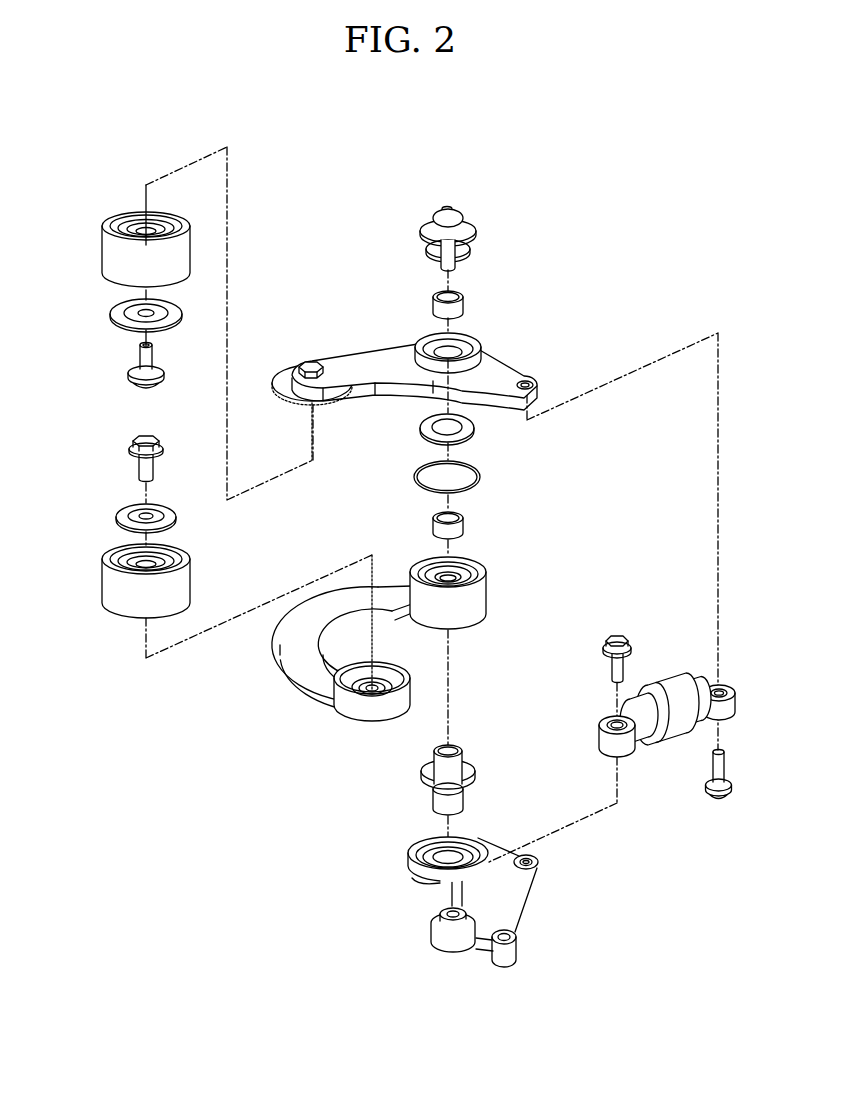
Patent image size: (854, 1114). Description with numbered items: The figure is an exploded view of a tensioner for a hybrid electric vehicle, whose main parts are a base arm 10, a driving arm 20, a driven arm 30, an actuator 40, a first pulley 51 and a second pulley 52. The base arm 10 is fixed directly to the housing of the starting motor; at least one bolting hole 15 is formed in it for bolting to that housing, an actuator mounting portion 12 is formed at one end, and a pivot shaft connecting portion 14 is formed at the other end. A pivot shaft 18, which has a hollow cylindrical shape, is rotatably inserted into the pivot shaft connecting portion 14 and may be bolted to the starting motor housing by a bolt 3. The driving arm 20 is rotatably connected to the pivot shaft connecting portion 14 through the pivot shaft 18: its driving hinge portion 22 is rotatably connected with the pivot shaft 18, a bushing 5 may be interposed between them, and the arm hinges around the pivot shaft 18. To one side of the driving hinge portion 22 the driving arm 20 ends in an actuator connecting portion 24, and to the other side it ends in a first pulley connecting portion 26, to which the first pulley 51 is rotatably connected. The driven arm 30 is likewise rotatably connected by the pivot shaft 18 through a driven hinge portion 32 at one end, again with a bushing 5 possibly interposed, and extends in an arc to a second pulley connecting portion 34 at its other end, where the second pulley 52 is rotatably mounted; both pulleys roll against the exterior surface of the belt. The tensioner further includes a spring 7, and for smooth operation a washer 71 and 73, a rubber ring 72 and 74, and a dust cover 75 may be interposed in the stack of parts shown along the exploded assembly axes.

The bolt 3 is at (136, 360).
The bushing 5 is at (465, 297).
The spring 7 is at (470, 757).
The base arm 10 is at (497, 902).
The actuator mounting portion 12 is at (438, 928).
The pivot shaft connecting portion 14 is at (430, 843).
The bolting hole 15 is at (540, 862).
The pivot shaft 18 is at (463, 796).
The driving arm 20 is at (435, 377).
The driving hinge portion 22 is at (427, 345).
The actuator connecting portion 24 is at (535, 384).
The first pulley connecting portion 26 is at (300, 366).
The driven arm 30 is at (281, 698).
The driven hinge portion 32 is at (480, 603).
The second pulley connecting portion 34 is at (356, 707).
The actuator 40 is at (683, 696).
The first pulley 51 is at (122, 256).
The second pulley 52 is at (114, 582).
The washer 71 is at (470, 222).
The rubber ring 72 is at (470, 250).
The washer 73 is at (473, 430).
The rubber ring 74 is at (482, 477).
The dust cover 75 is at (118, 313).